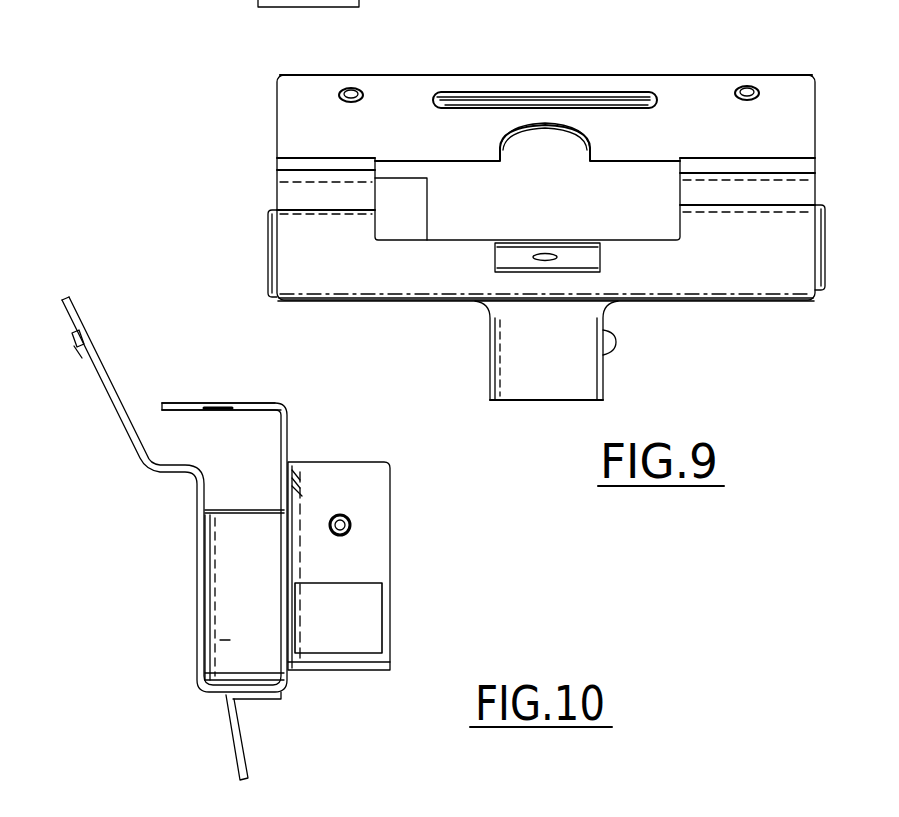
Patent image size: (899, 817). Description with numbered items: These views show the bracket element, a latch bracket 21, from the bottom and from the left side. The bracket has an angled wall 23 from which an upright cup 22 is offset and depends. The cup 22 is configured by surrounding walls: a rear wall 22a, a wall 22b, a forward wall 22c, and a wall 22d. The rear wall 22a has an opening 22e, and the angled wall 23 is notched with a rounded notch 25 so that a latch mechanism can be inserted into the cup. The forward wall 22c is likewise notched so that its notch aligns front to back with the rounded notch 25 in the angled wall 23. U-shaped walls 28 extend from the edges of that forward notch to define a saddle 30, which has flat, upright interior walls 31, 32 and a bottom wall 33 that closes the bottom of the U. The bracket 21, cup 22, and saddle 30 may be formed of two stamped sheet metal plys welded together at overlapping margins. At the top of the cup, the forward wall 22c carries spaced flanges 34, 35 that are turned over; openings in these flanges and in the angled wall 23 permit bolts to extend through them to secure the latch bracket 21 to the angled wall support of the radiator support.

In FIG. 9, the latch bracket 21 is at (565, 58).
In FIG. 10, the upright cup 22 is at (230, 494).
In FIG. 9, the rear wall 22a is at (725, 205).
In FIG. 10, the rear wall 22a is at (201, 580).
In FIG. 9, the wall 22b is at (268, 240).
In FIG. 9, the forward wall 22c is at (416, 300).
In FIG. 10, the forward wall 22c is at (290, 525).
In FIG. 9, the wall 22d is at (818, 278).
In FIG. 10, the wall 22d is at (230, 630).
In FIG. 9, the opening 22e is at (680, 186).
In FIG. 9, the angled wall 23 is at (800, 74).
In FIG. 10, the angled wall 23 is at (108, 408).
In FIG. 9, the rounded notch 25 is at (578, 130).
In FIG. 10, the U-shaped walls 28 is at (360, 546).
In FIG. 10, the saddle 30 is at (395, 498).
In FIG. 9, the upright interior wall 31 is at (600, 350).
In FIG. 9, the upright interior wall 32 is at (500, 353).
In FIG. 9, the bottom wall 33 is at (546, 380).
In FIG. 9, the flange 34 is at (418, 205).
In FIG. 10, the flange 35 is at (183, 400).